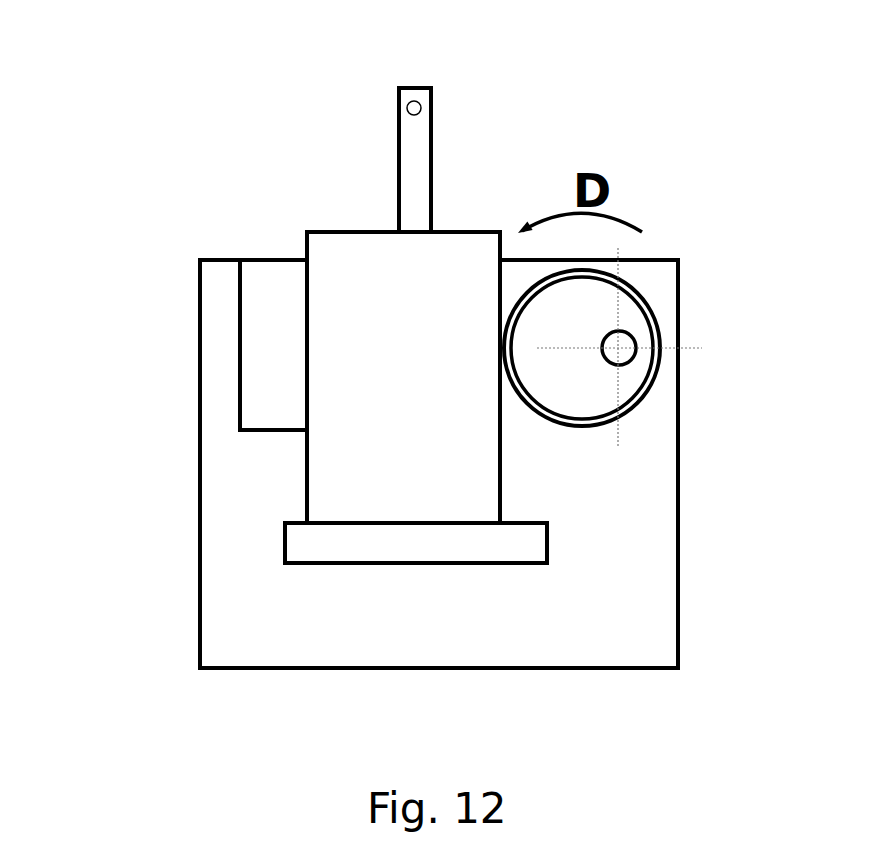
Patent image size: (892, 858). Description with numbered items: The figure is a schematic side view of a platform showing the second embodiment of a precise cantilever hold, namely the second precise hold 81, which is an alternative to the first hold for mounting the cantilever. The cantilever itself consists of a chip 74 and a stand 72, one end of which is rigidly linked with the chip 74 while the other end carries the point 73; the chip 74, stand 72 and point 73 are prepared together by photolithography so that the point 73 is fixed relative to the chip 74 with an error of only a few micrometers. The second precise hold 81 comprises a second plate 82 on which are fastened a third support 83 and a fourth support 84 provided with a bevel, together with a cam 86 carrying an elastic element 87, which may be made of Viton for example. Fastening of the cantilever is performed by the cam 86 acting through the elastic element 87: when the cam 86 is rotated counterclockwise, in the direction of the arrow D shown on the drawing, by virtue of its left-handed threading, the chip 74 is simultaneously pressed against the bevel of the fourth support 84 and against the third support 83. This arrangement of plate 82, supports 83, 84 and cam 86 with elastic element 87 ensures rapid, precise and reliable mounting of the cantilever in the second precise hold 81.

The stand 72 is at (416, 195).
The point 73 is at (425, 104).
The chip 74 is at (358, 293).
The second precise hold 81 is at (683, 557).
The second plate 82 is at (213, 562).
The third support 83 is at (305, 550).
The fourth support 84 is at (273, 346).
The cam 86 is at (583, 307).
The elastic element 87 is at (660, 314).